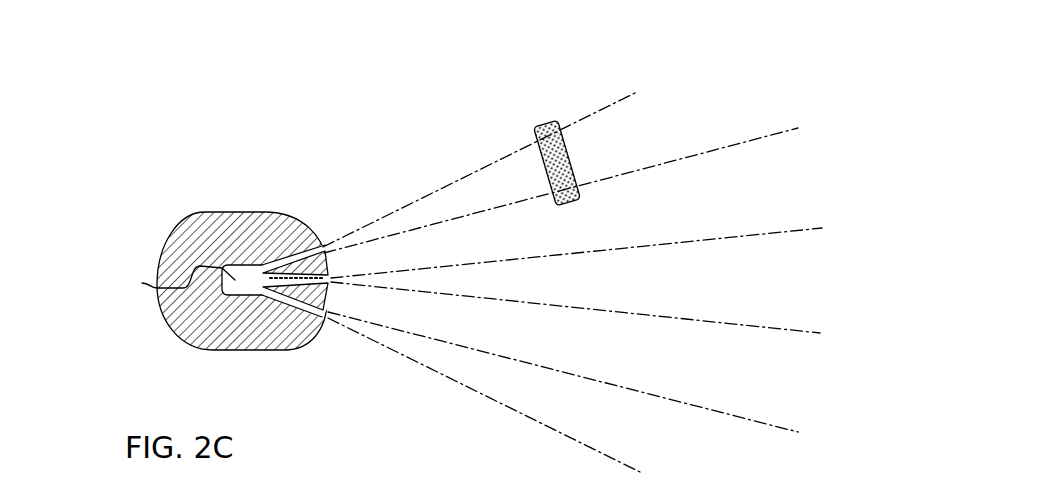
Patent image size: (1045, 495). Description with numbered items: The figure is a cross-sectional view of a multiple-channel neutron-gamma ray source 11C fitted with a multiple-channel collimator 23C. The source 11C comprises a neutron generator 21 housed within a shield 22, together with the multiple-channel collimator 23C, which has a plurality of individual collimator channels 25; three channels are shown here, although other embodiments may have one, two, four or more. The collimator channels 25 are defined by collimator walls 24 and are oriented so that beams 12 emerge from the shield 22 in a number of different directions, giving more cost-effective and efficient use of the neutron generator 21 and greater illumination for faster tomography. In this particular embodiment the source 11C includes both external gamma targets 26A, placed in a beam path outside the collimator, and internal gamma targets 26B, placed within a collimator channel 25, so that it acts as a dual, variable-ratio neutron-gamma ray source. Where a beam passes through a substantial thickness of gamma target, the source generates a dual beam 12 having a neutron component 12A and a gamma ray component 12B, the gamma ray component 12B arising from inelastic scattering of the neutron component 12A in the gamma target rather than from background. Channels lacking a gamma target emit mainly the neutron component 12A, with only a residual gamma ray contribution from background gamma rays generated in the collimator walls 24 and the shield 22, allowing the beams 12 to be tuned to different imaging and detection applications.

The multiple-channel neutron-gamma ray source 11C is at (93, 147).
The beam 12 is at (598, 82).
The neutron component 12A is at (534, 174).
The gamma ray component 12B is at (736, 95).
The neutron generator 21 is at (174, 279).
The shield 22 is at (176, 247).
The multiple-channel collimator 23C is at (317, 216).
The collimator walls 24 is at (292, 321).
The collimator channels 25 is at (313, 313).
The external gamma targets 26A is at (532, 128).
The internal gamma targets 26B is at (291, 277).